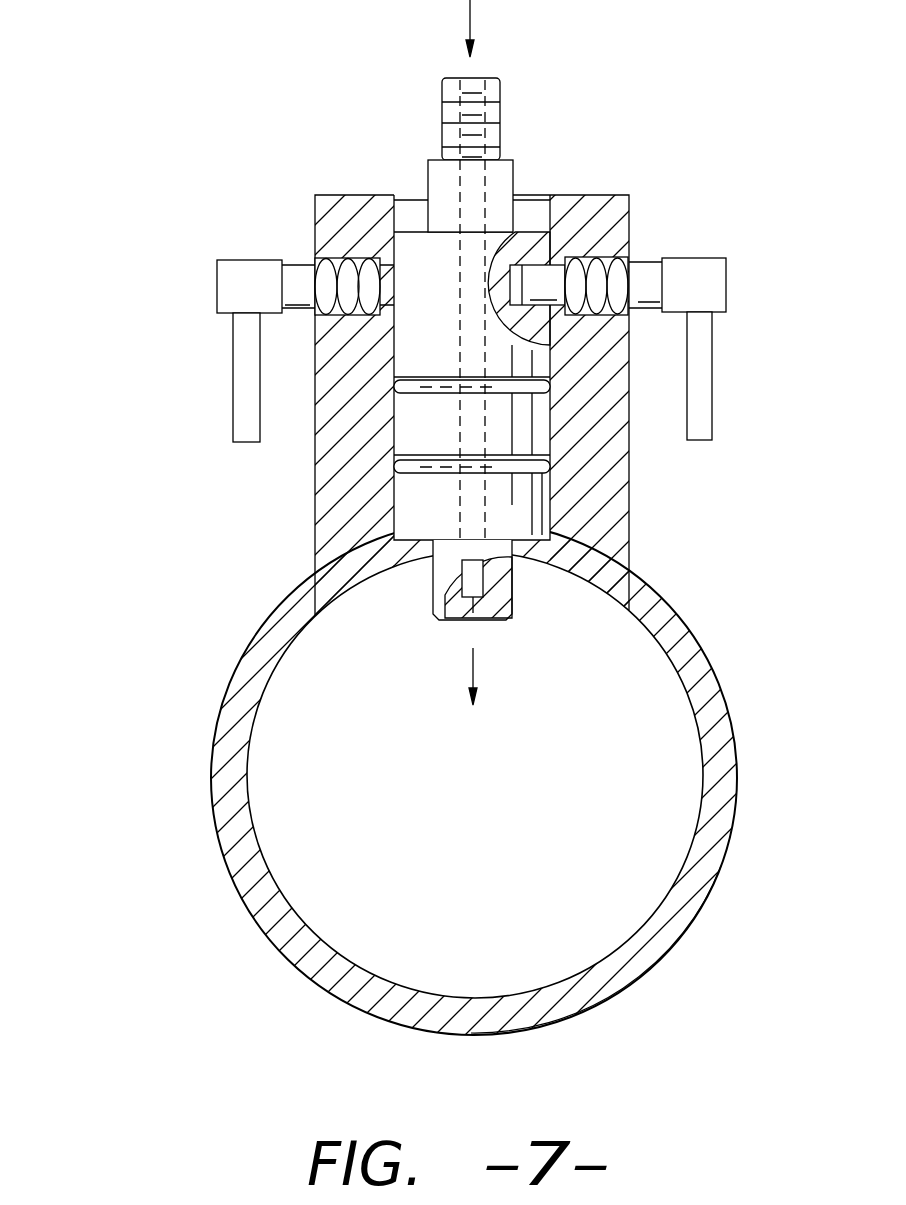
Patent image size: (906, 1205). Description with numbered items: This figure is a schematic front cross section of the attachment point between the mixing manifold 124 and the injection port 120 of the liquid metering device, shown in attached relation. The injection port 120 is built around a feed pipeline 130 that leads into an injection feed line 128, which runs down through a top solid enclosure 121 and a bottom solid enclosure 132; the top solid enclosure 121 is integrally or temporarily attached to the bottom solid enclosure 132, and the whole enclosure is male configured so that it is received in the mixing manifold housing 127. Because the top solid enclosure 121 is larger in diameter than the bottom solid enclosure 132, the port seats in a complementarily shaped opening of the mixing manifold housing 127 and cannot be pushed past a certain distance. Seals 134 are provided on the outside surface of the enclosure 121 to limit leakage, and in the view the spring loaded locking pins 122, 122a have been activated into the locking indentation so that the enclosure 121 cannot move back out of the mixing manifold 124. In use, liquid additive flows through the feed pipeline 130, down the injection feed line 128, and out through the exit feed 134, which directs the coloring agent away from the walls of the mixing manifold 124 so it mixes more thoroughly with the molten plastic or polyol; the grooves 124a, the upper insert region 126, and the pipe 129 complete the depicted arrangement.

The injection port 120 is at (170, 622).
The top solid enclosure 121 is at (410, 250).
The locking pin 122 is at (268, 260).
The locking pin 122a is at (680, 258).
The mixing manifold 124 is at (550, 383).
The groove 124a is at (550, 458).
The bushing 126 is at (530, 212).
The mixing manifold housing 127 is at (615, 192).
The injection feed line 128 is at (457, 182).
The pipe 129 is at (230, 697).
The feed pipeline 130 is at (500, 90).
The bottom solid enclosure 132 is at (433, 583).
The exit feed 134 is at (473, 620).